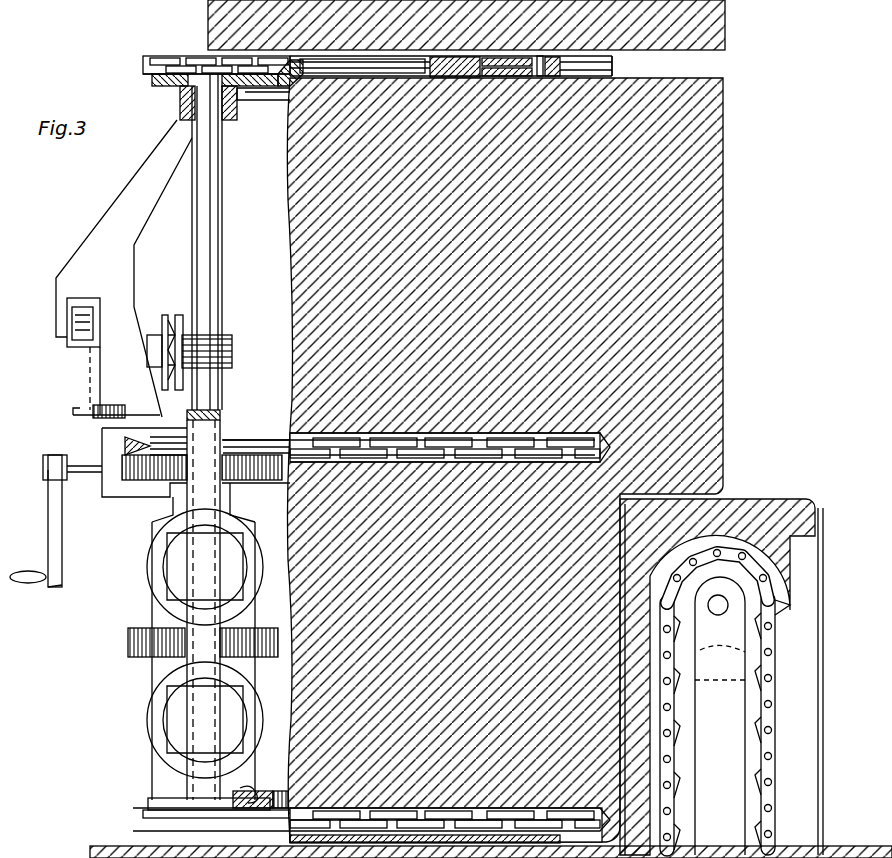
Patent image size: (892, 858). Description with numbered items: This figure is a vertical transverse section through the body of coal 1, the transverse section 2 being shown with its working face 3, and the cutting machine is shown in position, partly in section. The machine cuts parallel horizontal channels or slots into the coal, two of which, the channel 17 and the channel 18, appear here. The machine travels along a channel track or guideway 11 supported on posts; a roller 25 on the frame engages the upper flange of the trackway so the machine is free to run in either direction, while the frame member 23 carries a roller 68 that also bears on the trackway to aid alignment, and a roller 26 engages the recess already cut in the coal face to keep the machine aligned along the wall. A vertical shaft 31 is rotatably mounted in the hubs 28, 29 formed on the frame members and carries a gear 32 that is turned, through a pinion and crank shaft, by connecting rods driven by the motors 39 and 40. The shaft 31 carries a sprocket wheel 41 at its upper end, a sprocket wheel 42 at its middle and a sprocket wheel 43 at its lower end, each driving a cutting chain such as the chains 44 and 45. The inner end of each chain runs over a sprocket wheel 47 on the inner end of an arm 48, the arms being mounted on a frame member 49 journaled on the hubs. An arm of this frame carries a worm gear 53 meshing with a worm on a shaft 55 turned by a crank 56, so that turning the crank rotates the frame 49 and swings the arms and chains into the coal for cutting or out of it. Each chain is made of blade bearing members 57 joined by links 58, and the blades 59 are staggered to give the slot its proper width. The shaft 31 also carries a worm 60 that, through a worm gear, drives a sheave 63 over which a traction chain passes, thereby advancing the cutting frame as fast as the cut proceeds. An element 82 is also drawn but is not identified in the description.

The body of coal 1 is at (758, 273).
The transverse section 2 is at (705, 220).
The working face 3 is at (290, 307).
The track or guideway 11 is at (90, 377).
The channel or slot 17 is at (216, 50).
The channel or slot 18 is at (292, 432).
The frame member 23 is at (92, 238).
The roller 25 is at (73, 346).
The roller 26 is at (248, 788).
The hub 28 is at (237, 112).
The hub 29 is at (410, 808).
The vertical shaft 31 is at (222, 229).
The gear 32 is at (128, 645).
The motor 39 is at (150, 727).
The motor 40 is at (155, 560).
The sprocket wheel 41 is at (168, 57).
The sprocket wheel 42 is at (232, 440).
The sprocket wheel 43 is at (158, 805).
The cutting chain 44 is at (620, 66).
The cutting chain 45 is at (612, 447).
The sprocket wheel 47 is at (780, 608).
The arm 48 is at (292, 128).
The frame member 49 is at (195, 604).
The worm gear 53 is at (250, 483).
The shaft 55 is at (87, 480).
The crank 56 is at (48, 533).
The blade bearing member 57 is at (780, 745).
The link 58 is at (780, 716).
The blade 59 is at (615, 72).
The worm 60 is at (232, 349).
The sheave 63 is at (172, 318).
The roller 68 is at (113, 408).
The stop block 82 is at (283, 793).